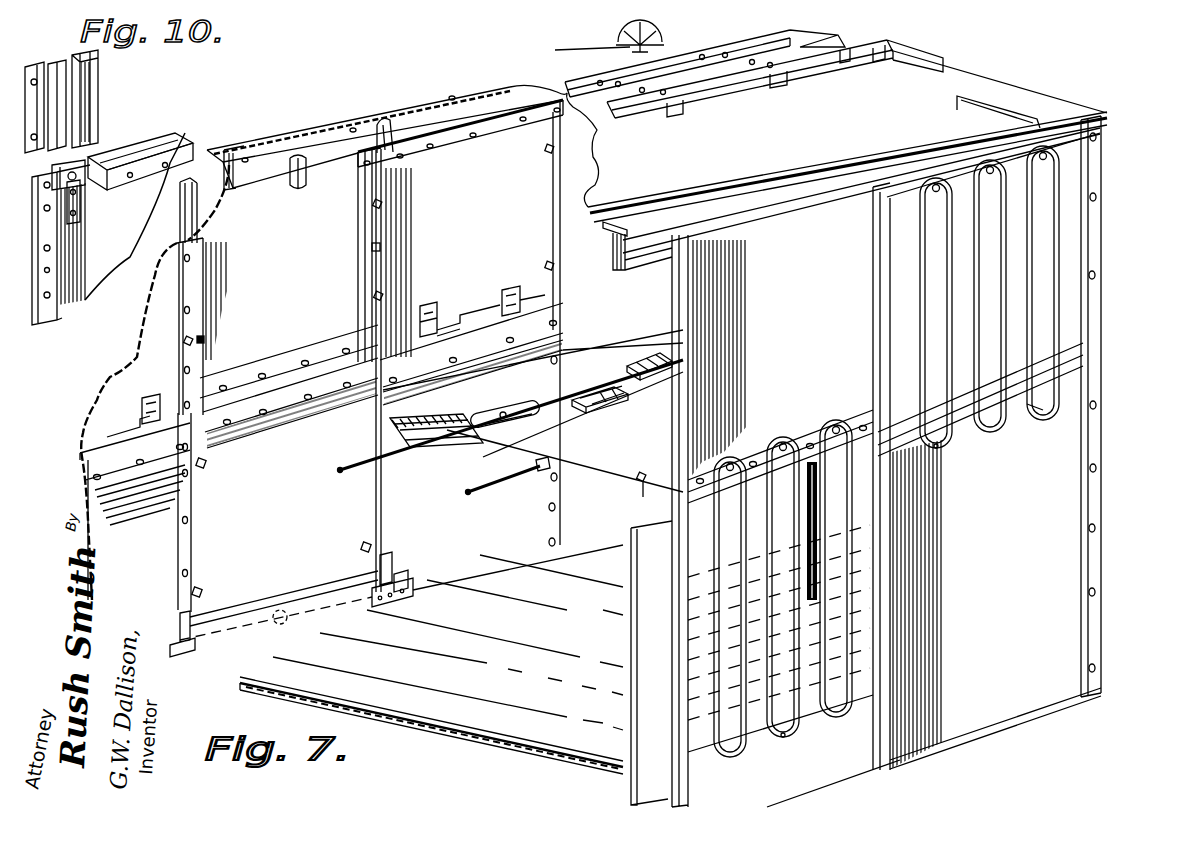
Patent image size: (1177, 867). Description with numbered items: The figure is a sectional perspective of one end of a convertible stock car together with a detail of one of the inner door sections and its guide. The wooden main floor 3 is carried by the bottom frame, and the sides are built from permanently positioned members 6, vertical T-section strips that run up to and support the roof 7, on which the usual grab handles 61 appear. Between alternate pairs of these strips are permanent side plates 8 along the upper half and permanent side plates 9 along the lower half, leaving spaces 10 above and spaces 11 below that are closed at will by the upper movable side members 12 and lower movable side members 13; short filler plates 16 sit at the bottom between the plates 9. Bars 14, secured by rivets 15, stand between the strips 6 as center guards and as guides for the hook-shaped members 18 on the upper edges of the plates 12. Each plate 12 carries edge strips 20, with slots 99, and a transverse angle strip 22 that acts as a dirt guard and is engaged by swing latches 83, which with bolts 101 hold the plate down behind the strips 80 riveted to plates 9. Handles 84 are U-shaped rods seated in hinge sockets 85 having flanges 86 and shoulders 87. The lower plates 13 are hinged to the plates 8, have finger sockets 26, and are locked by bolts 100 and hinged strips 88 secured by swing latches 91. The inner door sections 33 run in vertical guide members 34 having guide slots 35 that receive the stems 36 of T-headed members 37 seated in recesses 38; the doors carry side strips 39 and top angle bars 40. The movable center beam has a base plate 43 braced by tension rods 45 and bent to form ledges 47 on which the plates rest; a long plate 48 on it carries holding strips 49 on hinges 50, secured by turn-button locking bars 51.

In FIG. 7, the main floor 3 is at (431, 659).
In FIG. 7, the permanently positioned members 6 is at (689, 780).
In FIG. 7, the roof 7 is at (831, 145).
In FIG. 7, the permanent side plates 8 is at (779, 480).
In FIG. 7, the permanent side plates 9 is at (749, 476).
In FIG. 7, the spaces 10 is at (1070, 312).
In FIG. 7, the spaces 11 is at (870, 540).
In FIG. 7, the movable side members 12 is at (515, 216).
In FIG. 7, the movable side members 13 is at (180, 512).
In FIG. 7, the bars 14 is at (1055, 273).
In FIG. 7, the rivets 15 is at (937, 450).
In FIG. 7, the short filler plates 16 is at (765, 664).
In FIG. 7, the hook-shaped members 18 is at (1046, 412).
In FIG. 7, the edge strips 20 is at (366, 237).
In FIG. 7, the transverse angle strips 22 is at (470, 150).
In FIG. 7, the finger sockets 26 is at (278, 622).
In FIG. 10, the movable inner door sections 33 is at (108, 229).
In FIG. 10, the vertical guide members 34 is at (58, 66).
In FIG. 10, the guide slots 35 is at (70, 98).
In FIG. 10, the stems 36 is at (82, 186).
In FIG. 10, the T-headed members 37 is at (80, 165).
In FIG. 10, the recesses 38 is at (135, 160).
In FIG. 10, the strips 39 is at (45, 270).
In FIG. 10, the angle bars 40 is at (180, 145).
In FIG. 7, the angle bars 40 is at (387, 137).
In FIG. 7, the base plate 43 is at (430, 447).
In FIG. 7, the tension rods 45 is at (490, 495).
In FIG. 7, the ledges 47 is at (540, 472).
In FIG. 7, the long plate 48 is at (621, 378).
In FIG. 7, the holding strips 49 is at (452, 408).
In FIG. 7, the hinges 50 is at (590, 390).
In FIG. 7, the locking bars 51 is at (512, 408).
In FIG. 7, the grab handles 61 is at (972, 101).
In FIG. 7, the strips 80 is at (441, 375).
In FIG. 7, the swing latches 83 is at (384, 120).
In FIG. 7, the handles 84 is at (466, 330).
In FIG. 7, the hinge sockets 85 is at (522, 300).
In FIG. 7, the flanges 86 is at (512, 288).
In FIG. 7, the shoulders 87 is at (440, 306).
In FIG. 7, the hinged strips 88 is at (333, 585).
In FIG. 7, the swing latches 91 is at (395, 566).
In FIG. 7, the slots 99 is at (206, 339).
In FIG. 7, the bolts 100 is at (205, 463).
In FIG. 7, the bolts 101 is at (186, 342).